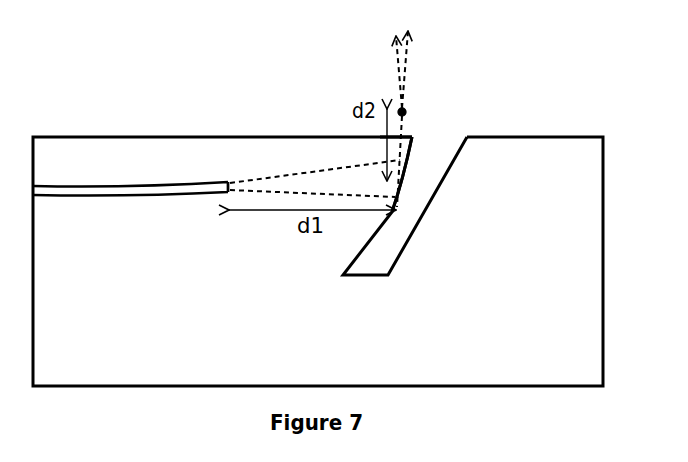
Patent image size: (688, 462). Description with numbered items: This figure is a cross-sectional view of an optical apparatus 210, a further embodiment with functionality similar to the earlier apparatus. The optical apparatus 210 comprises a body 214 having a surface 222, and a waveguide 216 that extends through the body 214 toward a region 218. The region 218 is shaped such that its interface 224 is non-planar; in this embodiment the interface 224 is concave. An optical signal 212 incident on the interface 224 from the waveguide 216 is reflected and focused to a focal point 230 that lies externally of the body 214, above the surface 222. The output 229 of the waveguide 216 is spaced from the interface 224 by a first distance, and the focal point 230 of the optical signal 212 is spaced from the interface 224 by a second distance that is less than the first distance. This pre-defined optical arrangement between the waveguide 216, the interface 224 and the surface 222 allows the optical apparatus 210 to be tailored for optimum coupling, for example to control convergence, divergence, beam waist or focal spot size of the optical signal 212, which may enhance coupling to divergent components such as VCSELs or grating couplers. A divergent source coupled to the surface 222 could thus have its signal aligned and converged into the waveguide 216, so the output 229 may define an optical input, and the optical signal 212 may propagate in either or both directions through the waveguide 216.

The optical apparatus 210 is at (102, 78).
The optical signal 212 is at (406, 55).
The body 214 is at (80, 152).
The waveguide 216 is at (104, 198).
The region 218 is at (382, 249).
The surface 222 is at (214, 137).
The interface 224 is at (410, 173).
The output 229 is at (225, 196).
The focal point 230 is at (409, 112).